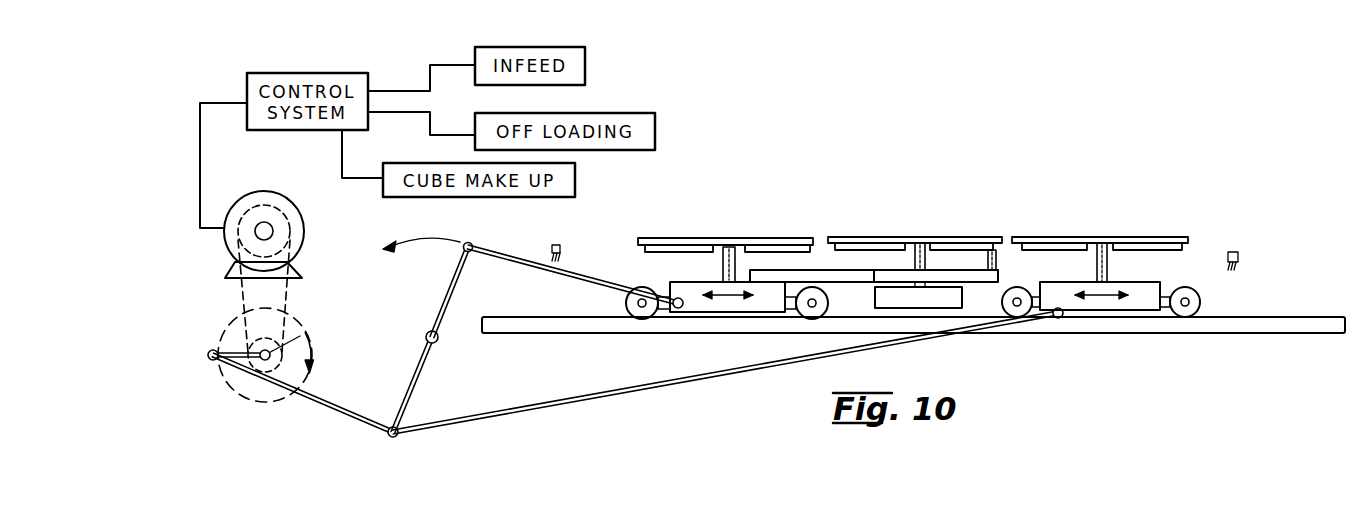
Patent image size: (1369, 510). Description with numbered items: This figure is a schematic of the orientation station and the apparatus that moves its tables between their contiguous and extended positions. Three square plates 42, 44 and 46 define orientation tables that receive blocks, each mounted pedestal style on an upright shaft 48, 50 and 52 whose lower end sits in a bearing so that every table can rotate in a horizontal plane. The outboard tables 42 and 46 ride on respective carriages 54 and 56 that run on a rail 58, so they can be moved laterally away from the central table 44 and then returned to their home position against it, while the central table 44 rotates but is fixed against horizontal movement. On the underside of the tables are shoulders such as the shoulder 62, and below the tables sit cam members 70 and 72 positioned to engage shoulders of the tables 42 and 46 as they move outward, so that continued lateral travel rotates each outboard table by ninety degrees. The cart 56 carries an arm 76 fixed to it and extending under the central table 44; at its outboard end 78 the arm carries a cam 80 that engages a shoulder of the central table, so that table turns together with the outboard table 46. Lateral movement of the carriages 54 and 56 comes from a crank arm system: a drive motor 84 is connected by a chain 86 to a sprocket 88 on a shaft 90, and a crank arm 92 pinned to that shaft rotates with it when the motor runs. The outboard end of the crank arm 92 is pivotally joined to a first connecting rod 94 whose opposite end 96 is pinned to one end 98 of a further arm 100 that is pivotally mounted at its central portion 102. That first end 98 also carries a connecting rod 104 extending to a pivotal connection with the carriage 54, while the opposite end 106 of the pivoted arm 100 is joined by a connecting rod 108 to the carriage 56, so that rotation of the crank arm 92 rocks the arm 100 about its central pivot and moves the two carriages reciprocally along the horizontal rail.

The square plate 42 is at (1103, 237).
The central table 44 is at (913, 237).
The square plate 46 is at (742, 237).
The upright shaft 48 is at (1097, 261).
The upright shaft 50 is at (914, 261).
The upright shaft 52 is at (737, 262).
The carriage 54 is at (1132, 278).
The carriage 56 is at (702, 285).
The rail 58 is at (1253, 322).
The shoulder 62 is at (1152, 251).
The cam member 70 is at (1240, 257).
The cam member 72 is at (563, 242).
The arm 76 is at (852, 273).
The outboard end 78 is at (972, 273).
The cam 80 is at (985, 257).
The drive motor 84 is at (300, 210).
The chain 86 is at (287, 303).
The sprocket 88 is at (274, 371).
The shaft 90 is at (300, 337).
The crank arm 92 is at (218, 347).
The first connecting rod 94 is at (327, 408).
The opposite end 96 is at (380, 435).
The first end 98 is at (400, 412).
The further arm 100 is at (430, 353).
The central portion 102 is at (427, 333).
The opposite end 106 is at (453, 272).
The connecting rod 108 is at (506, 257).
The connecting rod 104 is at (546, 405).